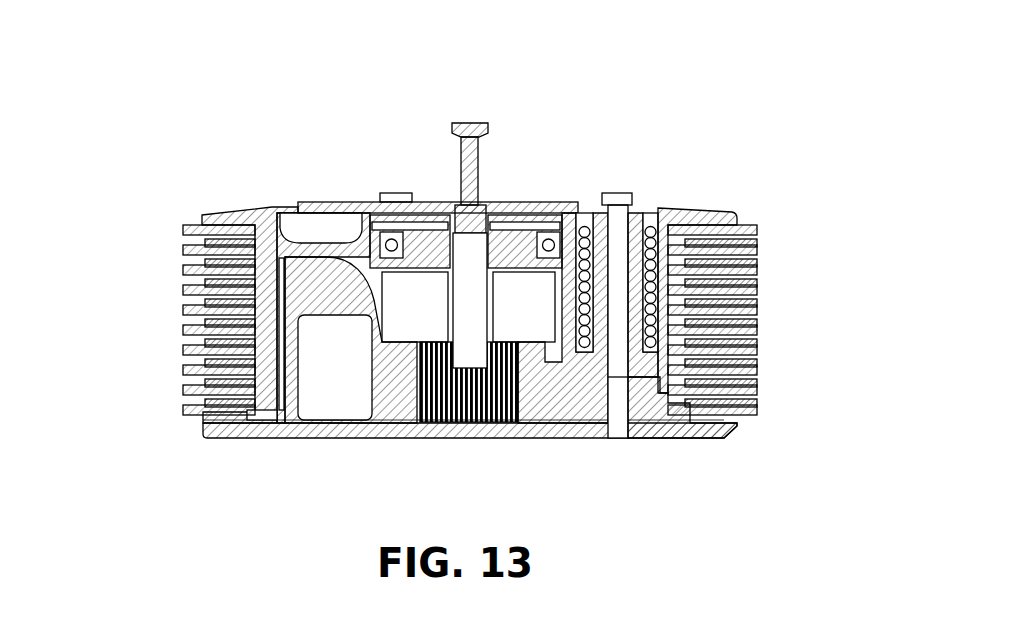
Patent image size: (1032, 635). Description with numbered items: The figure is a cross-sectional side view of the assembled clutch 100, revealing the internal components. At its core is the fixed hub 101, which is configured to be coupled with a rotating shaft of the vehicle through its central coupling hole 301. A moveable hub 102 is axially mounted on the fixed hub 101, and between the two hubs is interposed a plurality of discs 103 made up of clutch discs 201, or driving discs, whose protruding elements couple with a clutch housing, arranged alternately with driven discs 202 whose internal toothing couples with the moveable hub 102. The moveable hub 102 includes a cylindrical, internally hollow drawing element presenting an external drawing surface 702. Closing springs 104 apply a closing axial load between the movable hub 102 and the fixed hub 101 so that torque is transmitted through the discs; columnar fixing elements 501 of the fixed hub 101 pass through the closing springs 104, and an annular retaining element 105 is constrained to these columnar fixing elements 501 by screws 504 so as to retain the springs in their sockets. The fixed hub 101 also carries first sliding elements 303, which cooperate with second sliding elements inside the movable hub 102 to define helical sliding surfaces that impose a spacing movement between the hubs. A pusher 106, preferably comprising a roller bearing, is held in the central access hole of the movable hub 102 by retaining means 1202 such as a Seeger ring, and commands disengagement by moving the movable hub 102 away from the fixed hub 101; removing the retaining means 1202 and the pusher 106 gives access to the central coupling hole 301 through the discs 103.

The clutch 100 is at (788, 84).
The fixed hub 101 is at (650, 428).
The moveable hub 102 is at (693, 215).
The discs 103 is at (766, 328).
The closing springs 104 is at (582, 233).
The annular retaining element 105 is at (647, 215).
The pusher 106 is at (468, 207).
The clutch discs 201 is at (190, 307).
The driven discs 202 is at (215, 322).
The central coupling hole 301 is at (470, 402).
The first sliding elements 303 is at (327, 287).
The columnar fixing elements 501 is at (640, 288).
The screws 504 is at (618, 217).
The external drawing surface 702 is at (264, 314).
The retaining means 1202 is at (400, 226).